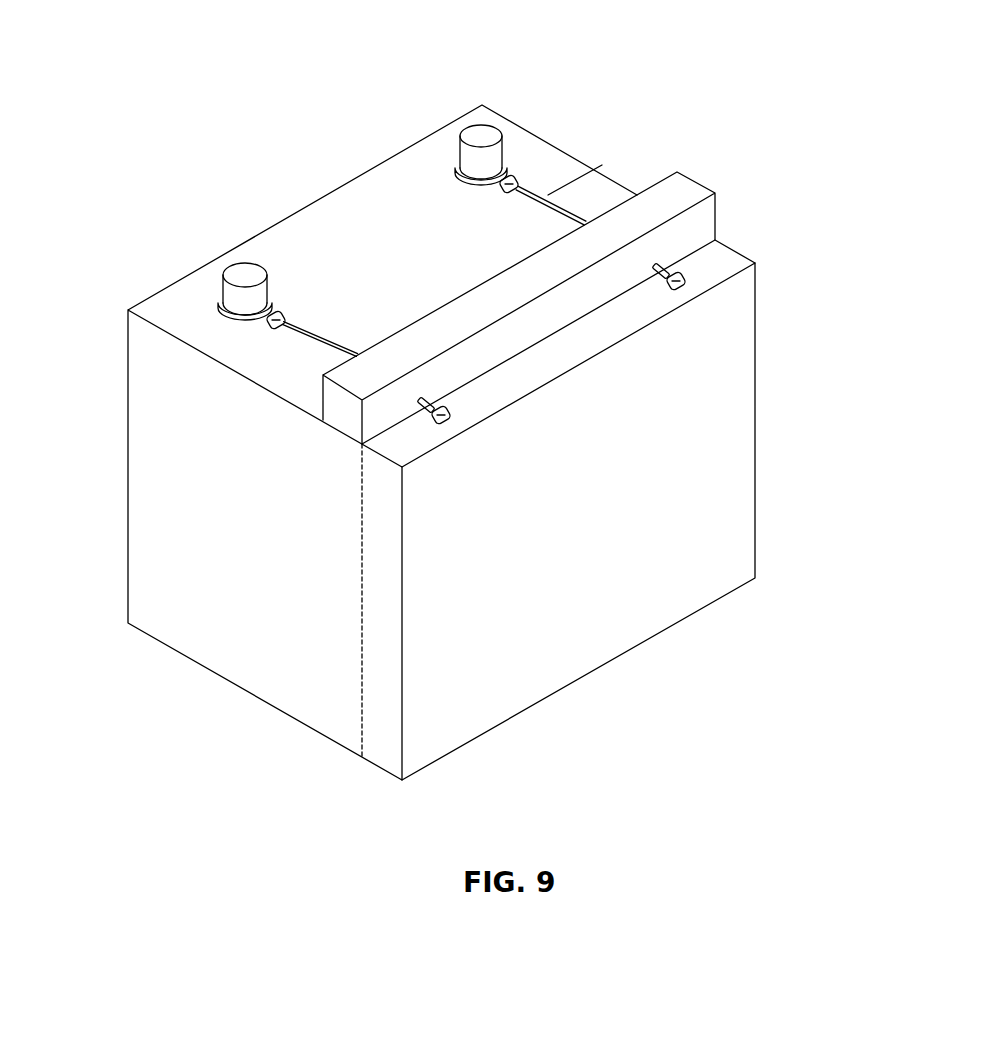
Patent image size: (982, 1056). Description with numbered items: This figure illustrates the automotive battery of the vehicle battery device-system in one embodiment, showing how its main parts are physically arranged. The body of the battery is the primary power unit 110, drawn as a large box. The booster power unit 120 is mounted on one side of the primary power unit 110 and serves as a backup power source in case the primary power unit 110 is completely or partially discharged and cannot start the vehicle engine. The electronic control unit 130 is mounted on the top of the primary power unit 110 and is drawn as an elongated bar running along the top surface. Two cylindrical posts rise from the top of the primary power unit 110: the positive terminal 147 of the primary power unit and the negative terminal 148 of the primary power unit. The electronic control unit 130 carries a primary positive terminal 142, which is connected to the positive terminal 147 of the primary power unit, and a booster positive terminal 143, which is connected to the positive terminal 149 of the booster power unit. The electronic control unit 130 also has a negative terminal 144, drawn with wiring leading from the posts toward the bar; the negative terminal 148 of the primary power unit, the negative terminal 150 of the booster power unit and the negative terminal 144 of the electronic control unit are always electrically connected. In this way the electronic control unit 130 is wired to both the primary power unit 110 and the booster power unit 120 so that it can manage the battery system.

The primary power unit 110 is at (230, 638).
The booster power unit 120 is at (682, 508).
The electronic control unit 130 is at (677, 197).
The primary positive terminal 142 is at (600, 173).
The booster positive terminal 143 is at (665, 265).
The negative terminal 144 is at (363, 458).
The positive terminal 147 is at (486, 137).
The negative terminal 148 is at (243, 272).
The positive terminal 149 is at (686, 287).
The negative terminal 150 is at (452, 420).